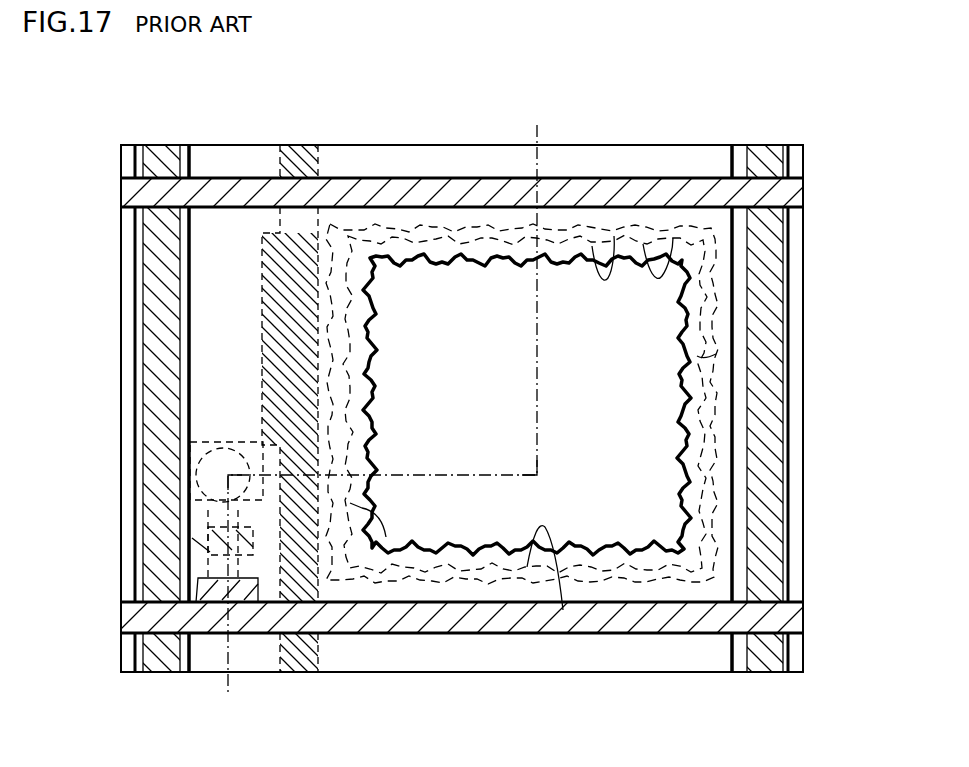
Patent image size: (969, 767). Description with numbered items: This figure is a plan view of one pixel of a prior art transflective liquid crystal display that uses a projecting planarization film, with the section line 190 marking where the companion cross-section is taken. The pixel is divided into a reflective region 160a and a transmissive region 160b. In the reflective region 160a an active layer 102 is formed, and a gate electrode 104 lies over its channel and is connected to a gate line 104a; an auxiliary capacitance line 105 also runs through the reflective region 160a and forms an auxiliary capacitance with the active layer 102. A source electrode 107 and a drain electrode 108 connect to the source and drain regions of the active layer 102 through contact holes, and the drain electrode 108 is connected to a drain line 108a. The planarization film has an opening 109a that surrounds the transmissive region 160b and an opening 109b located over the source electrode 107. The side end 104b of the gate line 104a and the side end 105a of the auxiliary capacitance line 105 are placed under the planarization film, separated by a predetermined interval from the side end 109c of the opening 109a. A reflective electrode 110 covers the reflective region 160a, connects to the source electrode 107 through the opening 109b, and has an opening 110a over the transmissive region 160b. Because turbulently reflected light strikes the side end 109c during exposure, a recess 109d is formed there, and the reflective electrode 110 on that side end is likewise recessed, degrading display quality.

The active layer 102 is at (207, 515).
The gate electrode 104 is at (197, 545).
The gate line 104a is at (165, 574).
The side end of the gate line 104b is at (745, 312).
The auxiliary capacitance line 105 is at (296, 272).
The side end of the auxiliary capacitance line 105a is at (318, 286).
The source electrode 107 is at (196, 452).
The drain electrode 108 is at (218, 625).
The drain line 108a is at (133, 195).
The opening 109a is at (613, 236).
The opening 109b is at (135, 475).
The side end of the opening 109c is at (673, 238).
The recess 109d is at (697, 356).
The reflective electrode 110 is at (186, 382).
The opening 110a is at (697, 536).
The reflective region 160a is at (223, 313).
The transmissive region 160b is at (567, 425).
The line 190— 190 is at (537, 92).